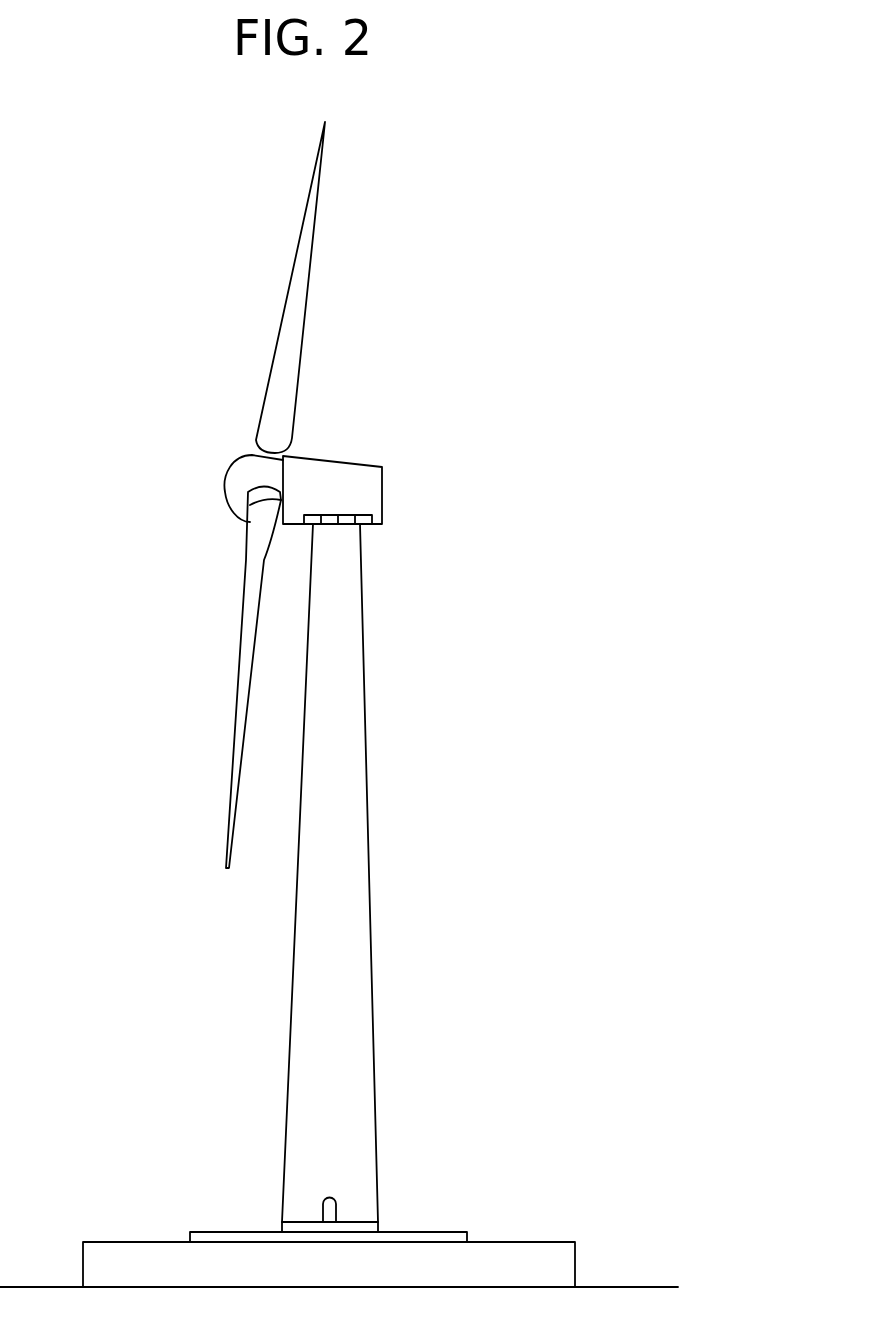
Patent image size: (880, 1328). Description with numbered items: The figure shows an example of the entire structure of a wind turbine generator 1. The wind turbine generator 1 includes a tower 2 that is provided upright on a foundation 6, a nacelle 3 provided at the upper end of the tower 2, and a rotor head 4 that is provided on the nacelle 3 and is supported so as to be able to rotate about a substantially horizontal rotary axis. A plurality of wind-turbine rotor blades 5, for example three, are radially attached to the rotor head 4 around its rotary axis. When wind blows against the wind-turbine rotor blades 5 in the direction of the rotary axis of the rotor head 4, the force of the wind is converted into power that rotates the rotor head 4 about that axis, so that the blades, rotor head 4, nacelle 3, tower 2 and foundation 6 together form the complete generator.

The wind turbine generator 1 is at (493, 396).
The tower 2 is at (367, 725).
The nacelle 3 is at (372, 421).
The rotor head 4 is at (225, 490).
The wind-turbine rotor blade 5 is at (313, 228).
The foundation 6 is at (557, 1250).